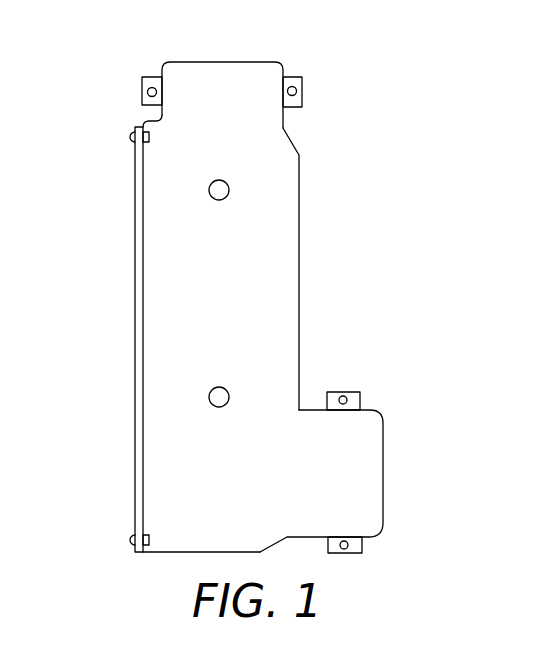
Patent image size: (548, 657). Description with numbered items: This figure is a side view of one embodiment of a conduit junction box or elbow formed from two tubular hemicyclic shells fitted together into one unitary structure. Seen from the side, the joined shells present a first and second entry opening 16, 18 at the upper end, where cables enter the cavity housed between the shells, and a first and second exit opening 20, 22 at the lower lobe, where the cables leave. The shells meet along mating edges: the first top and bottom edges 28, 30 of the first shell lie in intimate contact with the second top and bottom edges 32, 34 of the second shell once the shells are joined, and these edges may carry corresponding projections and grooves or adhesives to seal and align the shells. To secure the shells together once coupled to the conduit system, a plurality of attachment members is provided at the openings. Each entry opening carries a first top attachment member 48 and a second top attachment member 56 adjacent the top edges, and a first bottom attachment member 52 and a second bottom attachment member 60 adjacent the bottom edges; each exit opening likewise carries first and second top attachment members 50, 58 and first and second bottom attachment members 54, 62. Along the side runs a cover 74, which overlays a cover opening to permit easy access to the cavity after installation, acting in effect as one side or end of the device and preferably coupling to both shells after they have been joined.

The entry opening 16 is at (240, 207).
The entry opening 18 is at (213, 72).
The exit opening 20 is at (376, 481).
The exit opening 22 is at (370, 462).
The first top edge 28 is at (349, 269).
The first bottom edge 30 is at (201, 333).
The second top edge 32 is at (299, 253).
The second bottom edge 34 is at (143, 462).
The first top attachment member 48 is at (351, 78).
The first top attachment member 50 is at (391, 375).
The first bottom attachment member 52 is at (125, 56).
The first bottom attachment member 54 is at (391, 570).
The second top attachment member 56 is at (300, 90).
The second top attachment member 58 is at (345, 394).
The second bottom attachment member 60 is at (143, 92).
The second bottom attachment member 62 is at (345, 555).
The cover 74 is at (135, 295).